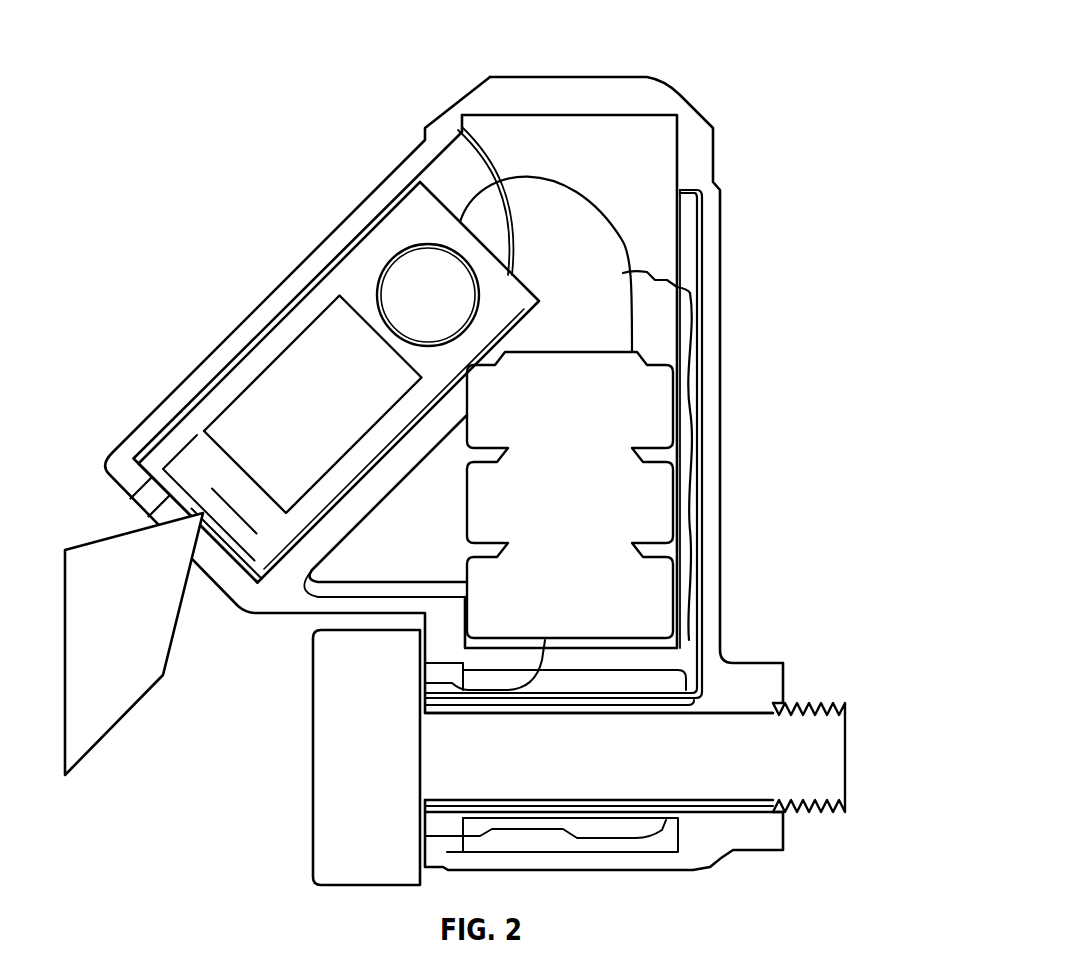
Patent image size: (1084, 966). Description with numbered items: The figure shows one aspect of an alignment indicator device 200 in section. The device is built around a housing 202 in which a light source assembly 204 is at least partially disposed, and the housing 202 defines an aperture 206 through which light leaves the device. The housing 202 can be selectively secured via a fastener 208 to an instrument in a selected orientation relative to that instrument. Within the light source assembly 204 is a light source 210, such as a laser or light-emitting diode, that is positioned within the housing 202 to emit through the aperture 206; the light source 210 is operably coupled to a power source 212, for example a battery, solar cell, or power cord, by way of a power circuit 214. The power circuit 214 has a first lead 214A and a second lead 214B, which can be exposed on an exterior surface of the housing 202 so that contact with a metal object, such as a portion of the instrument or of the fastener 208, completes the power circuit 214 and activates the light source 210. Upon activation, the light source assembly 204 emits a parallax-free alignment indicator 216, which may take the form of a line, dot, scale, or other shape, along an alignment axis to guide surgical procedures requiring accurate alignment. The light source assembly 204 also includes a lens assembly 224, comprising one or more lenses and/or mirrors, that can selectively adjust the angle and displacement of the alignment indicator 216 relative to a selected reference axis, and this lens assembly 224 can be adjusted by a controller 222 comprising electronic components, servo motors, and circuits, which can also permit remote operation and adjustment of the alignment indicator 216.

The alignment indicator device 200 is at (803, 57).
The housing 202 is at (451, 95).
The light source assembly 204 is at (430, 219).
The aperture 206 is at (174, 451).
The fastener 208 is at (810, 755).
The light source 210 is at (299, 401).
The power source 212 is at (634, 512).
The power circuit 214 is at (584, 195).
The first lead 214A is at (418, 685).
The second lead 214B is at (417, 831).
The alignment indicator 216 is at (105, 705).
The controller 222 is at (430, 295).
The lens assembly 224 is at (224, 498).